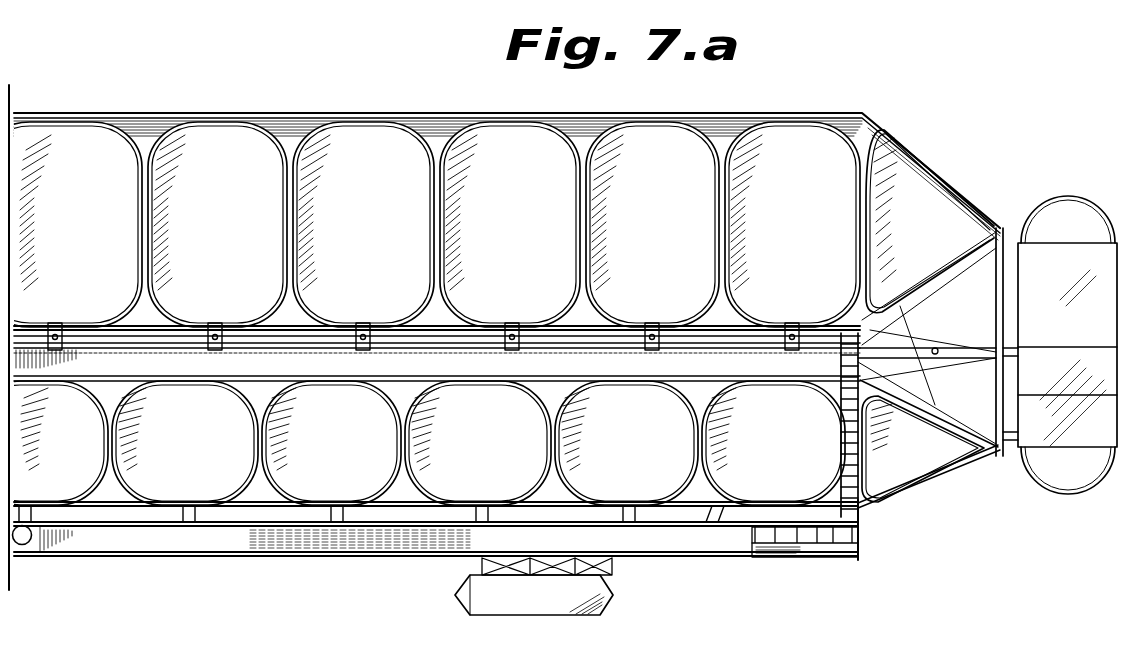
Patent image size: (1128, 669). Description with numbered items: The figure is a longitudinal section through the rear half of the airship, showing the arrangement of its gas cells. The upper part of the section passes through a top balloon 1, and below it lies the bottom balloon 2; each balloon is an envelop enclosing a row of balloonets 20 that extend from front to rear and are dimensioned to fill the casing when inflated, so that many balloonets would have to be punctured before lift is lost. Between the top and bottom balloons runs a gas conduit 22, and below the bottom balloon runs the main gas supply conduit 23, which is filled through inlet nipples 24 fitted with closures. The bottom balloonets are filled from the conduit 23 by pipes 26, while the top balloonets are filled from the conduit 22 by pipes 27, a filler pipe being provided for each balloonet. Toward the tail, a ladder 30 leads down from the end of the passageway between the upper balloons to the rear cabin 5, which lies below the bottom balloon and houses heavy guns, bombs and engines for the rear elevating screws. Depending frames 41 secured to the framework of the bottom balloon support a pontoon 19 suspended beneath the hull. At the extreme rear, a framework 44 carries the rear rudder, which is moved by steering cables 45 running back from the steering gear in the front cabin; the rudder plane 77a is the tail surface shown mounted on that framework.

The top balloon 1 is at (452, 120).
The bottom balloon 2 is at (260, 493).
The rear cabin 5 is at (818, 541).
The pontoon 19 is at (534, 595).
The balloonet 20 is at (497, 313).
The gas conduit 22 is at (505, 338).
The main gas supply conduit 23 is at (436, 530).
The inlet nipple 24 is at (24, 546).
The filler pipe for bottom balloonets 26 is at (199, 521).
The filler pipe for top balloonets 27 is at (363, 324).
The ladder 30 is at (845, 432).
The depending frame 41 is at (597, 569).
The rear rudder framework 44 is at (996, 452).
The steering cable 45 is at (1067, 368).
The rudder plane 77a is at (1068, 266).